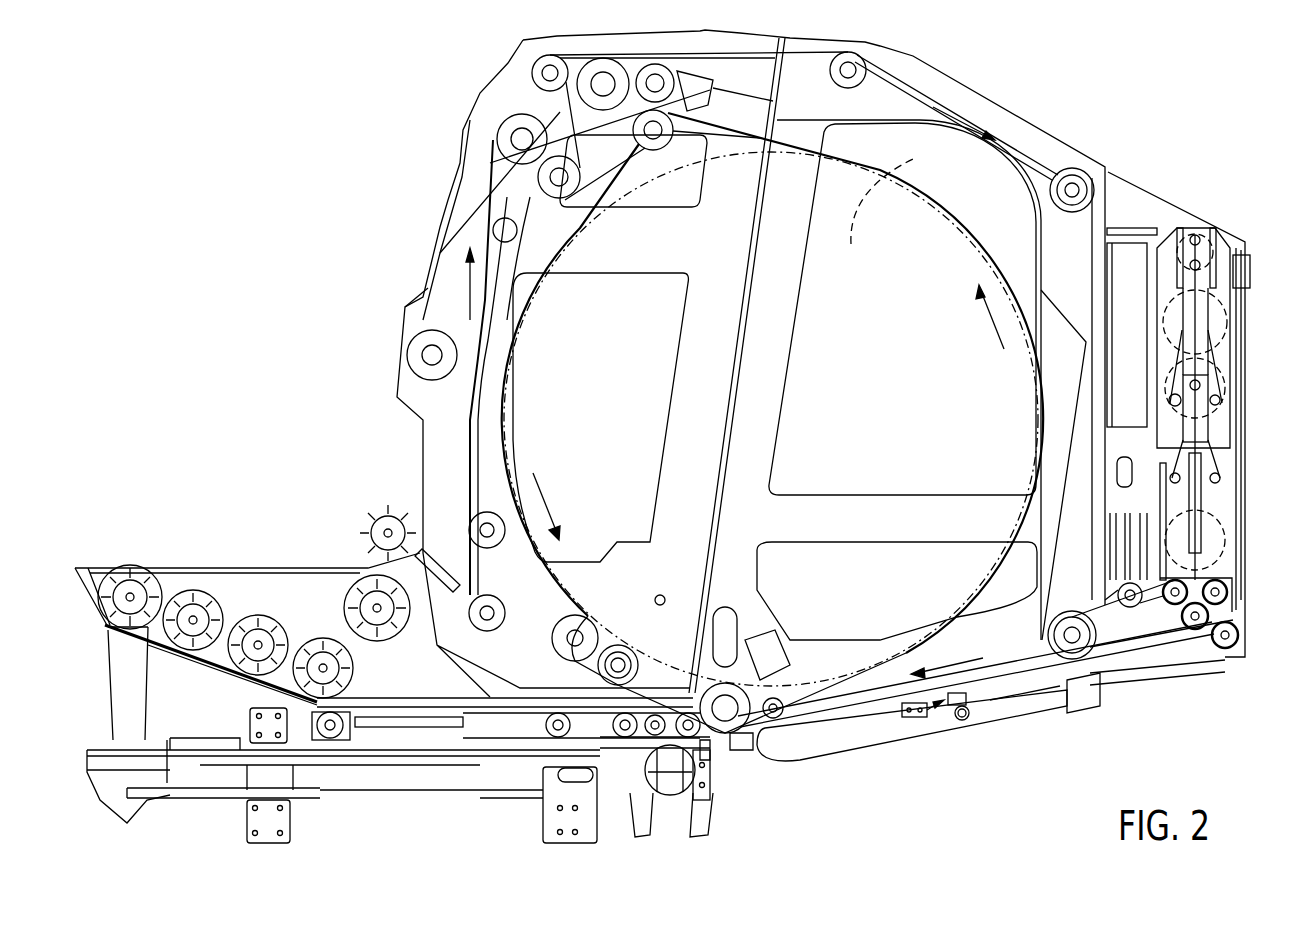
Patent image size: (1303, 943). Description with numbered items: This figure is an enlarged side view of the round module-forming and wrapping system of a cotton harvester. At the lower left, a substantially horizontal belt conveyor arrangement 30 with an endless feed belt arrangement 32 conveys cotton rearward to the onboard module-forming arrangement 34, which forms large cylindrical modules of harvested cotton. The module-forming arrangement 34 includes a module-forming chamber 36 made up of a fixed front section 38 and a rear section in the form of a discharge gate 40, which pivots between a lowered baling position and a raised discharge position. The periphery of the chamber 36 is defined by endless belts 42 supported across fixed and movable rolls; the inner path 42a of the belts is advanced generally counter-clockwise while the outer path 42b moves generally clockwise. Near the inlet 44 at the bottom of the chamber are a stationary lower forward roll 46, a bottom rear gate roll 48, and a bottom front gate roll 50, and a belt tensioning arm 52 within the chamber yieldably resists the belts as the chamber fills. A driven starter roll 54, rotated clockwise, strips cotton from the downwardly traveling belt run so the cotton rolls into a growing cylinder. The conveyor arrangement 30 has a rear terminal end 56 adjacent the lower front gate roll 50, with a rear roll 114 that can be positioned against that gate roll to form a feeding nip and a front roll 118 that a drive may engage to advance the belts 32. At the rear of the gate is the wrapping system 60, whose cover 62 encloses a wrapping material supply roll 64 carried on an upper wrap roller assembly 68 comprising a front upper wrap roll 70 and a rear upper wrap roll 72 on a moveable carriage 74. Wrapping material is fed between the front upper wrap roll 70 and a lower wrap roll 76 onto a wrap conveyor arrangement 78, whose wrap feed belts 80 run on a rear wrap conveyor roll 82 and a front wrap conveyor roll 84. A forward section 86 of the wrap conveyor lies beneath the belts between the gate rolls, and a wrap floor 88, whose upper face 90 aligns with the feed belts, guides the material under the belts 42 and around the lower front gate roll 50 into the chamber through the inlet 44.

The belt conveyor arrangement 30 is at (475, 770).
The endless feed belt arrangement 32 is at (490, 692).
The module-forming arrangement 34 is at (1050, 83).
The module-forming chamber 36 is at (890, 155).
The front section 38 is at (455, 172).
The discharge gate 40 is at (1063, 137).
The belts 42 is at (643, 180).
The inner path 42a is at (973, 244).
The outer path 42b is at (937, 93).
The inlet 44 is at (668, 672).
The lower forward roll 46 is at (593, 622).
The bottom rear gate roll 48 is at (1053, 630).
The bottom front gate roll 50 is at (720, 733).
The belt tensioning arm 52 is at (440, 253).
The starter roll 54 is at (623, 653).
The rear terminal end 56 is at (713, 740).
The wrapping system 60 is at (1223, 190).
The cover 62 is at (1157, 187).
The wrapping material supply roll 64 is at (1230, 540).
The upper wrap roller assembly 68 is at (1253, 600).
The front upper wrap roll 70 is at (1178, 606).
The rear upper wrap roll 72 is at (1233, 612).
The carriage 74 is at (1243, 587).
The lower wrap roll 76 is at (1197, 630).
The wrap conveyor arrangement 78 is at (1110, 712).
The wrap feed belts 80 is at (1018, 698).
The rear wrap conveyor roll 82 is at (1222, 653).
The front wrap conveyor roll 84 is at (963, 722).
The forward section 86 is at (920, 718).
The wrap floor 88 is at (830, 722).
The upper face 90 is at (840, 700).
The rear roll 114 is at (687, 725).
The front roll 118 is at (332, 727).